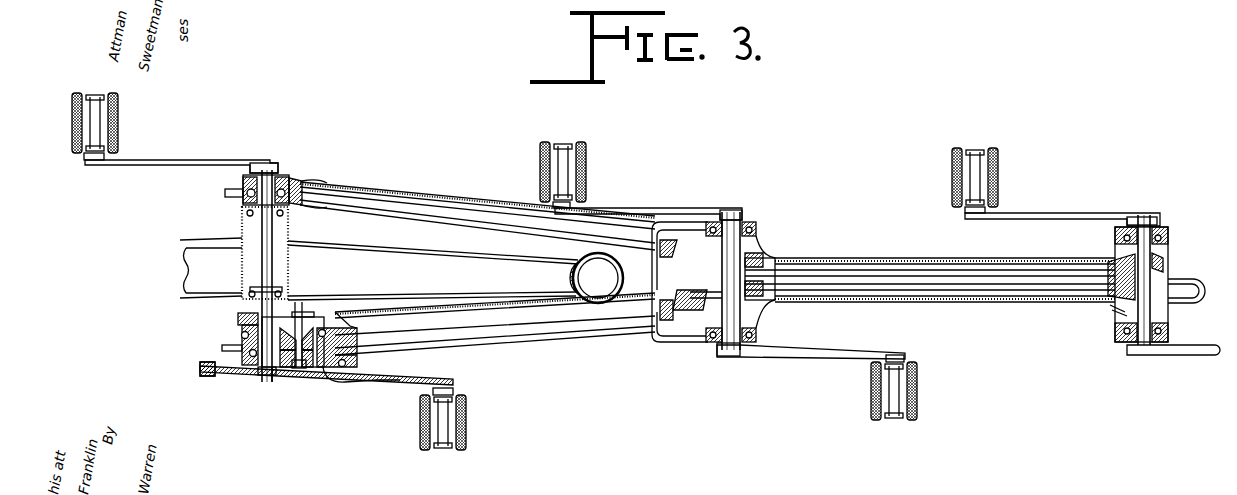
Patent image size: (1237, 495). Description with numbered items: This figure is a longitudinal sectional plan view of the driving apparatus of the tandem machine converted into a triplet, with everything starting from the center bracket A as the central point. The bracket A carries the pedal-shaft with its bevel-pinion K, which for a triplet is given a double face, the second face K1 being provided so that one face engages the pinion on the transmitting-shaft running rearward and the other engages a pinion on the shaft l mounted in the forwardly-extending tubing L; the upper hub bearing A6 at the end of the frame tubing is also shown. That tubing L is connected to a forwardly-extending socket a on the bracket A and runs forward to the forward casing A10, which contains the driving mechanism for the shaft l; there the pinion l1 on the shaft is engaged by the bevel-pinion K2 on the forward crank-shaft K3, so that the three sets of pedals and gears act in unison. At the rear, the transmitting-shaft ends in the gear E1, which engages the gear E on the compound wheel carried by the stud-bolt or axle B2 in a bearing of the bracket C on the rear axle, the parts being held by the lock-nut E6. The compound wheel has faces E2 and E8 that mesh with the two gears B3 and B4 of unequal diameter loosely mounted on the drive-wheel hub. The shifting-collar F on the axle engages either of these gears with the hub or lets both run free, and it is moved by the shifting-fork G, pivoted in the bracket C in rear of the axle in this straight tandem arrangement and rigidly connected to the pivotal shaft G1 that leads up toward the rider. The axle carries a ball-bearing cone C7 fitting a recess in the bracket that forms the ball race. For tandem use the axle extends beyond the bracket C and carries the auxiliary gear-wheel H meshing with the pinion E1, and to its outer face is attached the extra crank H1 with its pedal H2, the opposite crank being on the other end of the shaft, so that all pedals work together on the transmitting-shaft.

The center bracket A is at (717, 282).
The upper hub bearing A6 is at (292, 182).
The forward casing A10 is at (1167, 268).
The stud-bolt or axle B2 is at (305, 356).
The gear B3 is at (236, 316).
The gear B4 is at (242, 330).
The bracket C is at (290, 365).
The ball-bearing cone C7 is at (270, 370).
The gear E is at (327, 326).
The gear E1 is at (377, 372).
The gear face E2 is at (318, 326).
The lock-nut E6 is at (310, 362).
The gear face E8 is at (317, 317).
The shifting-collar F is at (266, 375).
The shifting-fork G is at (240, 348).
The pivotal shaft G1 is at (245, 338).
The gear-wheel H is at (240, 372).
The crank H1 is at (340, 393).
The pedal H2 is at (465, 412).
The bevel-pinion K is at (674, 283).
The bevel-pinion face K1 is at (712, 290).
The bevel-pinion K2 is at (1138, 276).
The forward crank-shaft K3 is at (1152, 228).
The forwardly-extending tubing L is at (945, 289).
The shaft l is at (930, 285).
The pinion l1 is at (1113, 307).
The forwardly-extending socket a is at (806, 296).